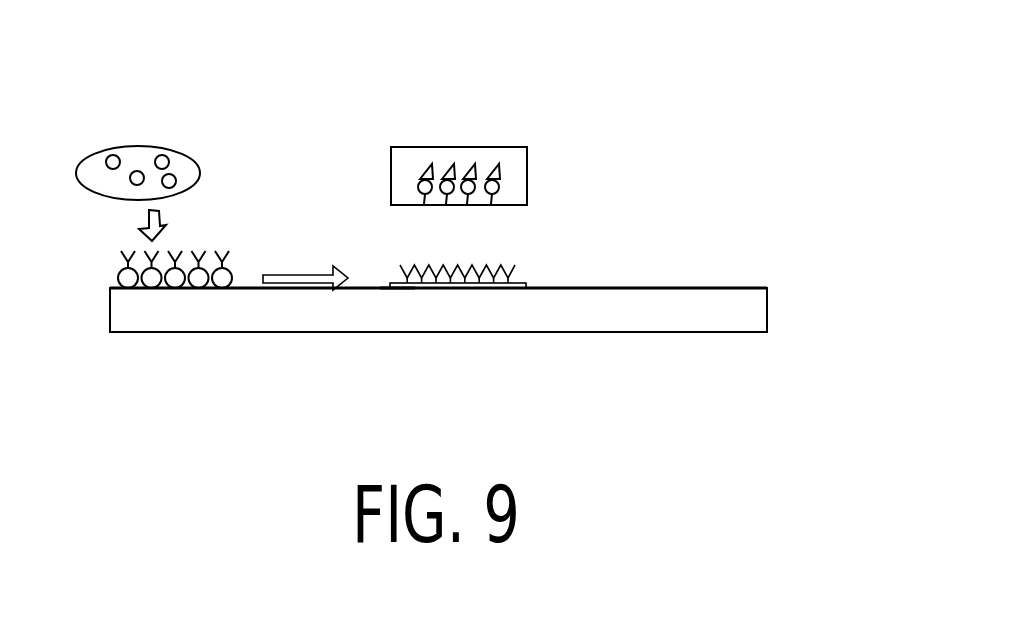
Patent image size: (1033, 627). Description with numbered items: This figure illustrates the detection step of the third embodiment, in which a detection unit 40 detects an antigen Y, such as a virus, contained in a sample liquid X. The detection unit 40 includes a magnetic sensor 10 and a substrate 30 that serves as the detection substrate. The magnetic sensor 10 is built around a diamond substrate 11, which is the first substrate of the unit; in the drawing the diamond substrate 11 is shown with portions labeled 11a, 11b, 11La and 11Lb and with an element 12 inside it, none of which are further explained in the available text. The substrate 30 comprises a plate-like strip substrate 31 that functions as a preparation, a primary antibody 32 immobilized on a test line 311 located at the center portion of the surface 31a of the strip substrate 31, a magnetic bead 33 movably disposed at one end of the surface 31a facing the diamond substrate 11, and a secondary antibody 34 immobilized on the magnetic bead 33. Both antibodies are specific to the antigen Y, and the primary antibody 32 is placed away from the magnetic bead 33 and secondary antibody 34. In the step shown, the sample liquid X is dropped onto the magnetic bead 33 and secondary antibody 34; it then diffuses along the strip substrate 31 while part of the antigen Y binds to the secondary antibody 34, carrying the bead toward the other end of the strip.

The magnetic sensor 10 is at (454, 151).
The diamond substrate 11 is at (391, 173).
The first surface of chip substrate 11a is at (513, 205).
The second surface of chip substrate 11b is at (513, 147).
The first side surface of chip substrate 11La is at (405, 205).
The second side surface of chip substrate 11Lb is at (405, 147).
The capture probes 12 is at (460, 159).
The substrate 30 is at (742, 254).
The strip substrate 31 is at (748, 307).
The surface 31a is at (718, 288).
The test line 311 is at (392, 288).
The primary antibody 32 is at (513, 272).
The magnetic bead 33 is at (118, 278).
The secondary antibody 34 is at (121, 255).
The detection unit 40 is at (703, 107).
The sample liquid X is at (192, 168).
The antigen Y is at (137, 171).